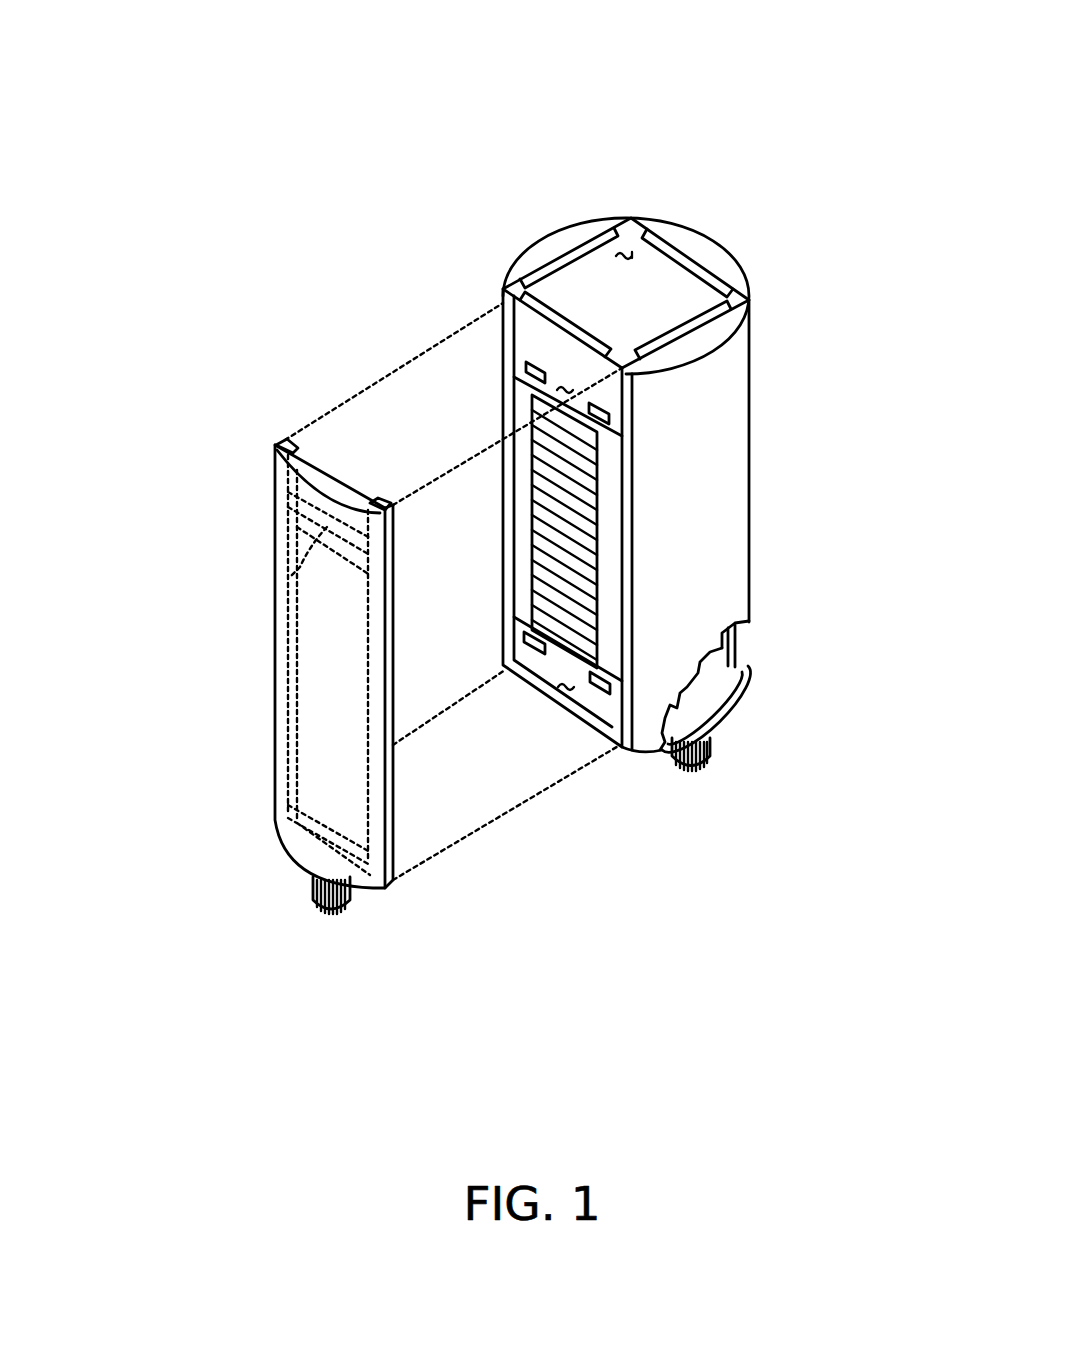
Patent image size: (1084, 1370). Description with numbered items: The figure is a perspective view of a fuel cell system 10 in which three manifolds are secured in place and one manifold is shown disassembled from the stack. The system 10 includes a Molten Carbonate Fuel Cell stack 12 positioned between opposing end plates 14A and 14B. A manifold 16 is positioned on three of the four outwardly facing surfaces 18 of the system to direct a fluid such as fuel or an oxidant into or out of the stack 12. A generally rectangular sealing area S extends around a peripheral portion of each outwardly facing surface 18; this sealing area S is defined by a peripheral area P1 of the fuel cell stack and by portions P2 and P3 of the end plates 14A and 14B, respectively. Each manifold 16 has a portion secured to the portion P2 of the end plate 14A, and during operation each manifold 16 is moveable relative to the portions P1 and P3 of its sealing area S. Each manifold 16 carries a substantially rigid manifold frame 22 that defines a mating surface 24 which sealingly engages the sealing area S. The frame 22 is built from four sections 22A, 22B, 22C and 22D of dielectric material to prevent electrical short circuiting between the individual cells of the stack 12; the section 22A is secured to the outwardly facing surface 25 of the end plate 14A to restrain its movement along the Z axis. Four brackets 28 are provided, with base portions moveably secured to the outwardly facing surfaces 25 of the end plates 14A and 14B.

The fuel cell system 10 is at (807, 107).
The Molten Carbonate Fuel Cell stack 12 is at (552, 688).
The end plate 14A is at (607, 717).
The end plate 14B is at (632, 252).
The manifold 16 is at (551, 205).
The outwardly facing surface 18 is at (494, 380).
The manifold frame 22 is at (626, 458).
The manifold frame section 22A is at (368, 892).
The manifold frame section 22B is at (627, 582).
The manifold frame section 22C is at (505, 477).
The manifold frame section 22D is at (290, 583).
The mating surface 24 is at (393, 668).
The outwardly facing surface of end plate 25 is at (565, 394).
The bracket 28 is at (530, 367).
The sealing area S is at (540, 320).
The peripheral area of fuel cell stack P1 is at (523, 533).
The portion of end plate 14A P2 is at (545, 667).
The portion of end plate 14B P3 is at (568, 347).